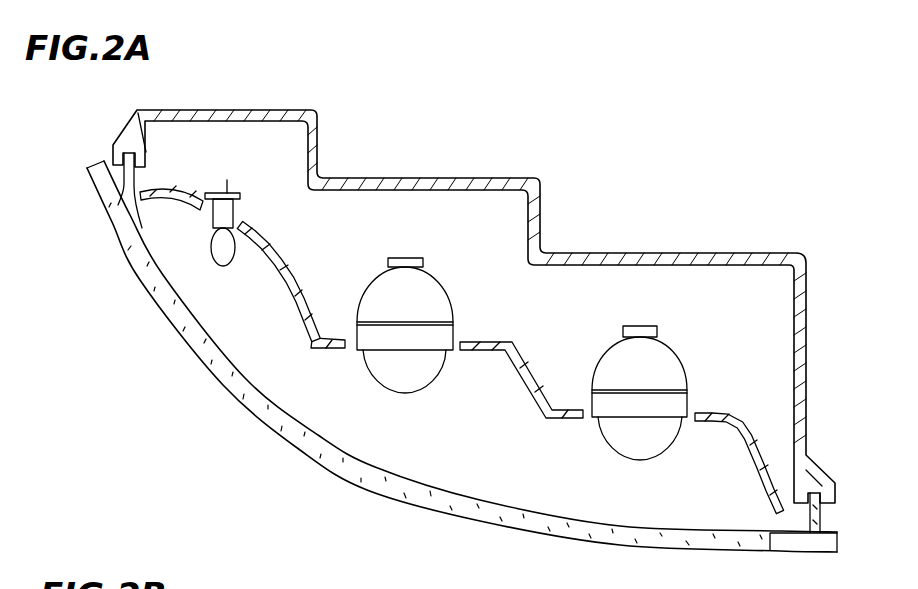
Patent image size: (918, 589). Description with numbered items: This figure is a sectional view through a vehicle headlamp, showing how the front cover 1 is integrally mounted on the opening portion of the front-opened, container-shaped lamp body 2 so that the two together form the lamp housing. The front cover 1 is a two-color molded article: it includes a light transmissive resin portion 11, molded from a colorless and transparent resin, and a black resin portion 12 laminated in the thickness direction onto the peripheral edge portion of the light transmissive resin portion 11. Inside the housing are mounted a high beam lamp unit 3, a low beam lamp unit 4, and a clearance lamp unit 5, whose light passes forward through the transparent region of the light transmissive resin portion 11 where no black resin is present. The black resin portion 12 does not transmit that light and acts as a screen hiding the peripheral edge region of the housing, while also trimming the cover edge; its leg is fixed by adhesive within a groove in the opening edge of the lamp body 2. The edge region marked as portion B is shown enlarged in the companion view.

The front cover 1 is at (584, 537).
The lamp body 2 is at (488, 178).
The high beam lamp unit 3 is at (648, 462).
The low beam lamp unit 4 is at (397, 394).
The clearance lamp unit 5 is at (215, 268).
The light transmissive resin portion 11 is at (285, 422).
The black resin portion 12 is at (120, 236).
The portion B is at (99, 223).